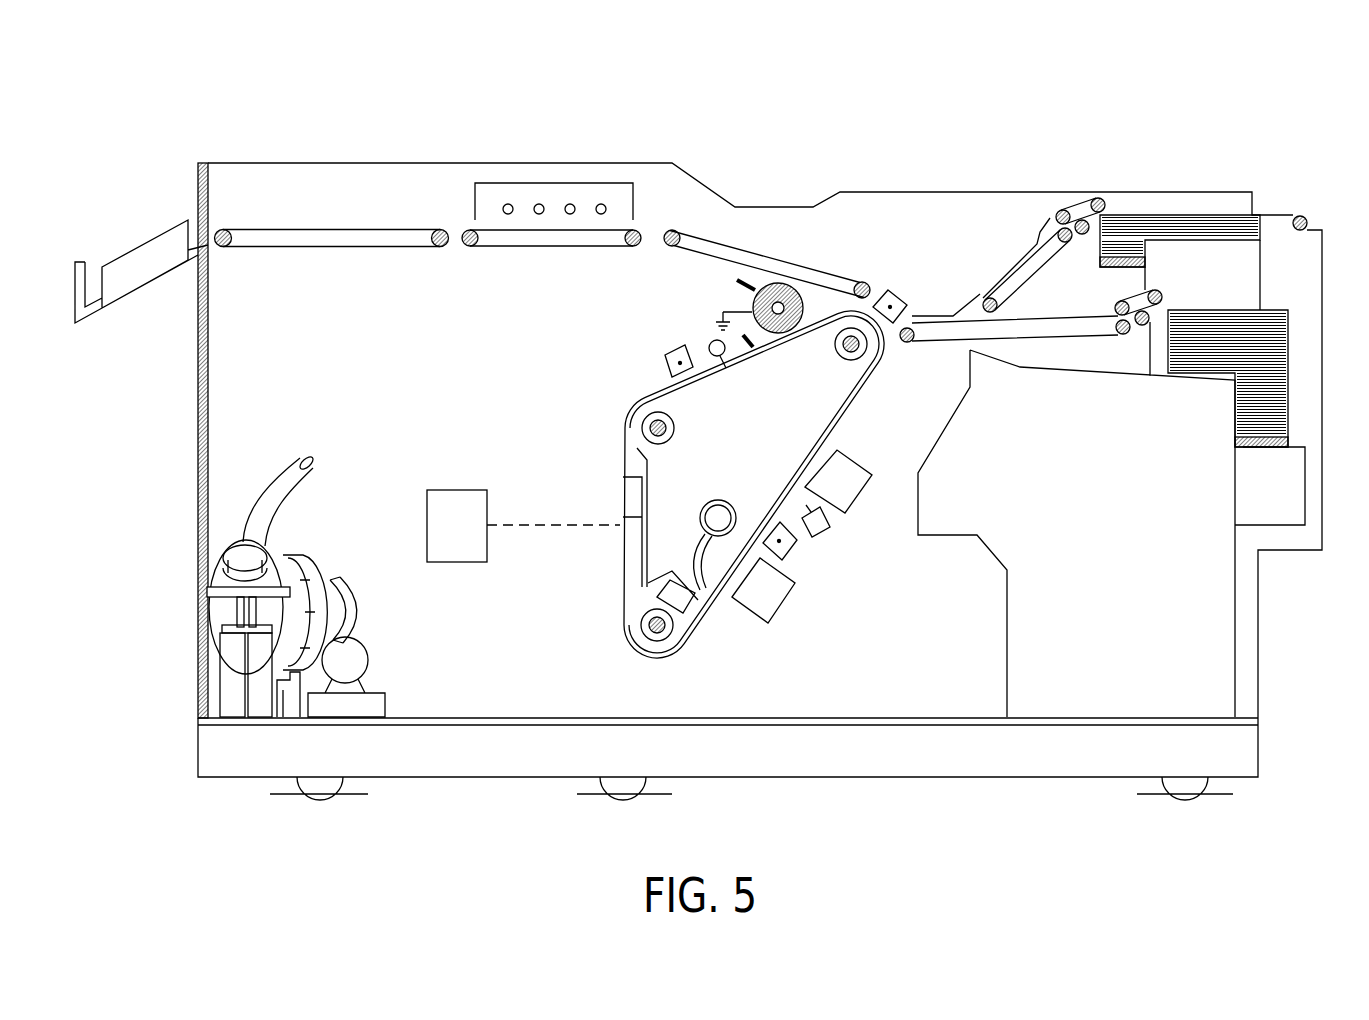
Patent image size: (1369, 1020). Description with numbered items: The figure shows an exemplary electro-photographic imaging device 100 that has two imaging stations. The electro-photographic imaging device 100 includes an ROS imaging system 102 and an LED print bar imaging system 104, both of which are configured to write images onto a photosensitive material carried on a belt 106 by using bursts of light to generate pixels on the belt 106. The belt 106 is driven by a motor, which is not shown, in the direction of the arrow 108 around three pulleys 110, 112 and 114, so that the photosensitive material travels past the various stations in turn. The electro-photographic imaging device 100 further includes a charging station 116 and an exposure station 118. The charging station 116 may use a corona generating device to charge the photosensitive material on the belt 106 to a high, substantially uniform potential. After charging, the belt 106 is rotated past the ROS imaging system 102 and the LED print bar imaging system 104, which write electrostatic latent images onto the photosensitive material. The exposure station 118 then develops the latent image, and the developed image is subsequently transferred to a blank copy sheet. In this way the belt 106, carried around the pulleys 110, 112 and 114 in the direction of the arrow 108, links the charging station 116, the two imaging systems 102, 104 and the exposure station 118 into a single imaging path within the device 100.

The electro-photographic imaging device 100 is at (1030, 112).
The ROS imaging system 102 is at (457, 497).
The LED print bar imaging system 104 is at (856, 545).
The belt 106 is at (662, 388).
The arrow 108 is at (866, 400).
The pulley 110 is at (648, 640).
The pulley 112 is at (865, 351).
The pulley 114 is at (640, 413).
The charging station 116 is at (696, 313).
The exposure station 118 is at (913, 285).